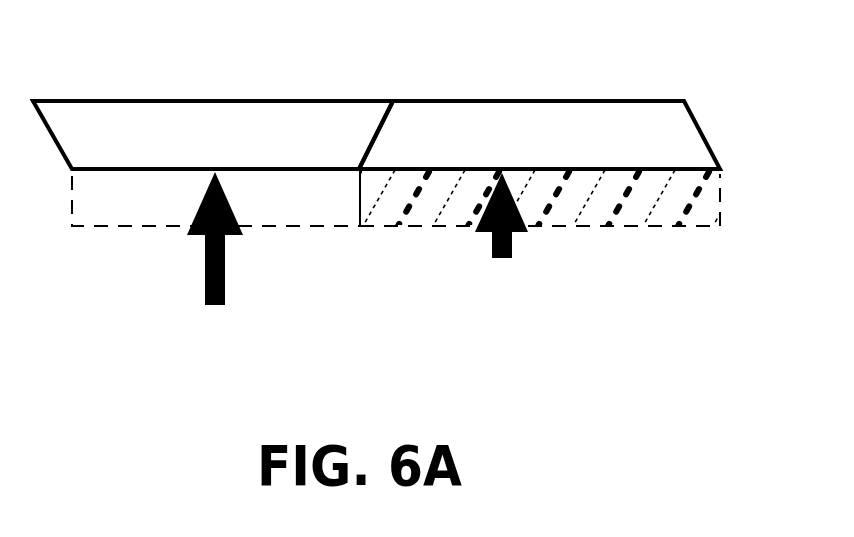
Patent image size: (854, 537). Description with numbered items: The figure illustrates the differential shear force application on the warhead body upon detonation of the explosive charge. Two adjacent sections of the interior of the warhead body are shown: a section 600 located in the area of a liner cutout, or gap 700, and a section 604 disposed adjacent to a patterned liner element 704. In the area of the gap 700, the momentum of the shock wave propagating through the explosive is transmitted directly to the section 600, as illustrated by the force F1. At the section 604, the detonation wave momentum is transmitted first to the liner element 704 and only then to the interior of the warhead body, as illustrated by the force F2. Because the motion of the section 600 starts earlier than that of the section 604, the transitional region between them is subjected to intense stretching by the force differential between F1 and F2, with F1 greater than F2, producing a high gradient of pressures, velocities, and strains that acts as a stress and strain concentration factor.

The section of the warhead body interior 600 is at (131, 123).
The section of the warhead body interior 604 is at (578, 125).
The gap 700 is at (137, 203).
The patterned liner element 704 is at (630, 202).
The force F1 is at (215, 267).
The force F2 is at (501, 246).